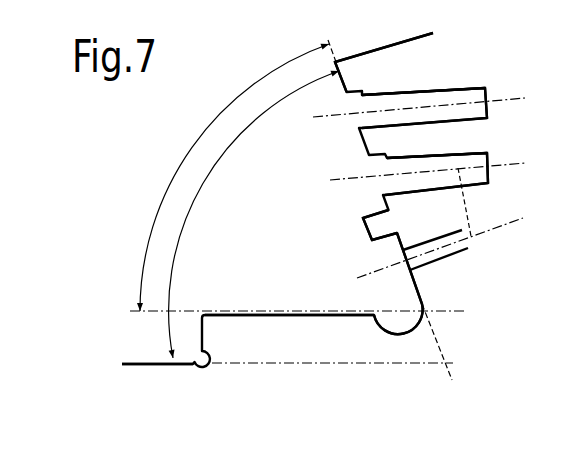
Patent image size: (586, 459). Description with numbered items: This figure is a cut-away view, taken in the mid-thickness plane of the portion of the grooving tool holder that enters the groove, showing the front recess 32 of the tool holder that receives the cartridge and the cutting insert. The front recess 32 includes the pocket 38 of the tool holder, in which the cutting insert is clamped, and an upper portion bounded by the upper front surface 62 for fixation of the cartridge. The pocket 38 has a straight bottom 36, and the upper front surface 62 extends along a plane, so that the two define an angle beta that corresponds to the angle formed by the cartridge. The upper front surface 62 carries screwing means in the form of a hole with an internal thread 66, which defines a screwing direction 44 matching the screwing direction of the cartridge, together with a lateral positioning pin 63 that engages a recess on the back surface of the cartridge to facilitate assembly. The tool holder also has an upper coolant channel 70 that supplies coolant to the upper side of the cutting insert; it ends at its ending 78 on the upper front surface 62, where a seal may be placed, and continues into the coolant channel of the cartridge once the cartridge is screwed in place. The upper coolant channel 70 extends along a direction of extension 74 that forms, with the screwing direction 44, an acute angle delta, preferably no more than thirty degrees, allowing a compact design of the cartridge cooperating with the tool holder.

The front recess 32 is at (280, 259).
The straight bottom 36 is at (150, 365).
The pocket 38 is at (158, 347).
The screwing direction 44 is at (497, 100).
The upper front surface 62 is at (345, 77).
The lateral positioning pin 63 is at (365, 233).
The internal thread 66 is at (457, 85).
The upper coolant channel 70 is at (445, 258).
The direction of extension 74 is at (378, 269).
The ending 78 is at (403, 250).